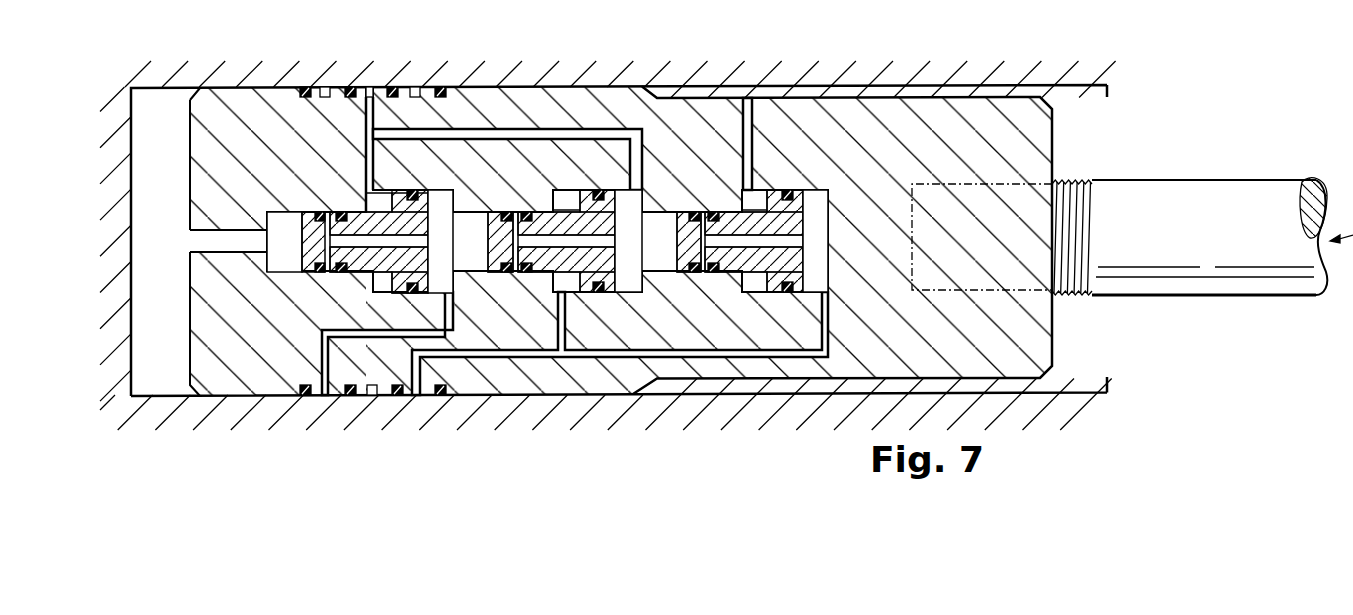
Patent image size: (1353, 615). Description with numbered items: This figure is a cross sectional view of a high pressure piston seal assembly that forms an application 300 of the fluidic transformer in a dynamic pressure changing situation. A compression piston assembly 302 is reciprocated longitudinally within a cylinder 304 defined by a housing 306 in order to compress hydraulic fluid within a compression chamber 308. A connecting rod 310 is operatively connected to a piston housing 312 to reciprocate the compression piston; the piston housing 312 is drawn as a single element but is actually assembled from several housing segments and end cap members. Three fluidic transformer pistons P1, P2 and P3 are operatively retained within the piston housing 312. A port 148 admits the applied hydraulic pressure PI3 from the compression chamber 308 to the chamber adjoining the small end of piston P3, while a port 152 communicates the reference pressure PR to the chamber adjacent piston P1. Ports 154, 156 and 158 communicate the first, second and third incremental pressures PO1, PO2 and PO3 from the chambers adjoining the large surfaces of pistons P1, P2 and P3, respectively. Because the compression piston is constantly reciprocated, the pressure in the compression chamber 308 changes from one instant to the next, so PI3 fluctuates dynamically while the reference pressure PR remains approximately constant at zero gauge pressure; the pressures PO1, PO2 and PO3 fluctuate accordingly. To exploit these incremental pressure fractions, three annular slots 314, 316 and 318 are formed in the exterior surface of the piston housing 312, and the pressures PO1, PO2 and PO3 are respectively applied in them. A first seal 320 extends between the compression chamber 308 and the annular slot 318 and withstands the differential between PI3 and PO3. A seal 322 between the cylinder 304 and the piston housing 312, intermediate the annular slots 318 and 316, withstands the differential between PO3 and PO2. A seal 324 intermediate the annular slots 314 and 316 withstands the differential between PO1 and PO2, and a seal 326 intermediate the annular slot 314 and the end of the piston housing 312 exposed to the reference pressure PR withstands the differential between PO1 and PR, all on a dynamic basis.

The application of the fluidic transformer 300 is at (520, 44).
The compression piston assembly 302 is at (670, 92).
The cylinder 304 is at (155, 88).
The housing 306 is at (233, 82).
The compression chamber 308 is at (173, 304).
The connecting rod 310 is at (1192, 242).
The piston housing 312 is at (574, 117).
The annular slot 314 is at (415, 86).
The annular slot 316 is at (392, 86).
The annular slot 318 is at (325, 86).
The first seal 320 is at (305, 86).
The seal 322 is at (350, 86).
The seal 324 is at (390, 106).
The seal 326 is at (440, 86).
The port 148 is at (214, 237).
The port 152 is at (752, 122).
The port 154 is at (668, 352).
The port 156 is at (362, 127).
The port 158 is at (340, 330).
The piston P1 is at (790, 190).
The piston P2 is at (600, 190).
The piston P3 is at (438, 190).
The applied hydraulic pressure PI3 is at (190, 241).
The first incremental pressure PO1 is at (416, 402).
The second incremental pressure PO2 is at (369, 87).
The third incremental pressure PO3 is at (326, 402).
The reference pressure PR is at (746, 98).